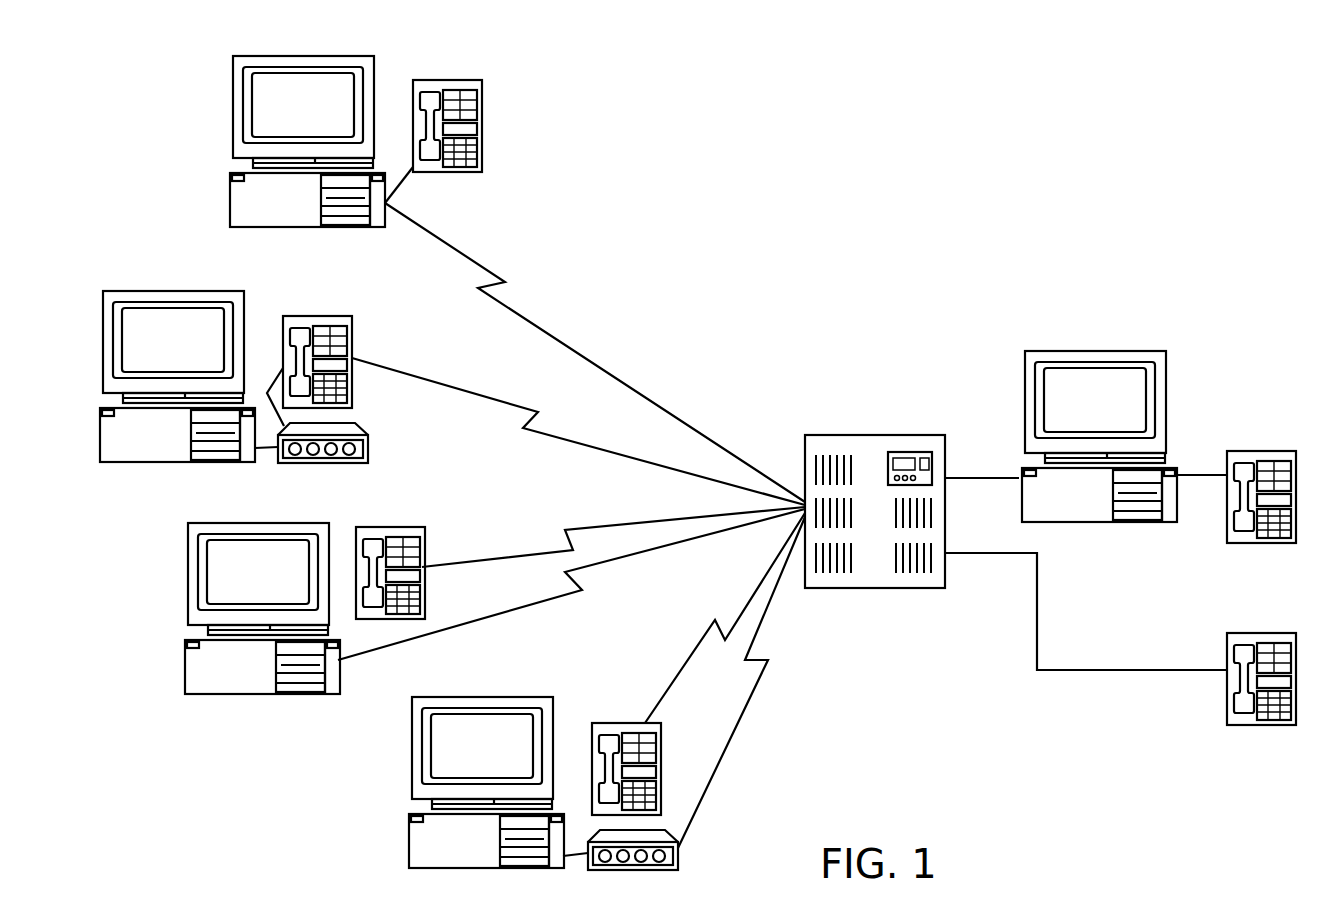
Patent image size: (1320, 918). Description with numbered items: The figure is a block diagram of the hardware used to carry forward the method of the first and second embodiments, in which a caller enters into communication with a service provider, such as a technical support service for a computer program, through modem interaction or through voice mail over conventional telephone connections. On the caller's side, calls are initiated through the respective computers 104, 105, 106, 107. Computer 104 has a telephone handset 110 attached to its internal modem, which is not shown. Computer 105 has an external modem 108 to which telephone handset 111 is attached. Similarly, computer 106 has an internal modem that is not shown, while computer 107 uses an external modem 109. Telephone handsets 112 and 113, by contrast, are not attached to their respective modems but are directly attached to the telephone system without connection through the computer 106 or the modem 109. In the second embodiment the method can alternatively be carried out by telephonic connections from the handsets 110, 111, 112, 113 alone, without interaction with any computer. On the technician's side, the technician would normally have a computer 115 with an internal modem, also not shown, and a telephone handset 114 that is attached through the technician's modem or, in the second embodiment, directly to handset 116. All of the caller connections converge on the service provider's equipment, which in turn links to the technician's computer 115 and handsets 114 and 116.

The computer 104 is at (376, 78).
The computer 105 is at (190, 290).
The computer 106 is at (316, 523).
The computer 107 is at (480, 697).
The external modem 108 is at (359, 426).
The external modem 109 is at (652, 832).
The telephone handset 110 is at (483, 106).
The telephone handset 111 is at (330, 316).
The telephone handset 112 is at (405, 527).
The telephone handset 113 is at (617, 723).
The telephone handset 114 is at (1255, 451).
The computer 115 is at (1167, 365).
The telephone handset 116 is at (1255, 633).